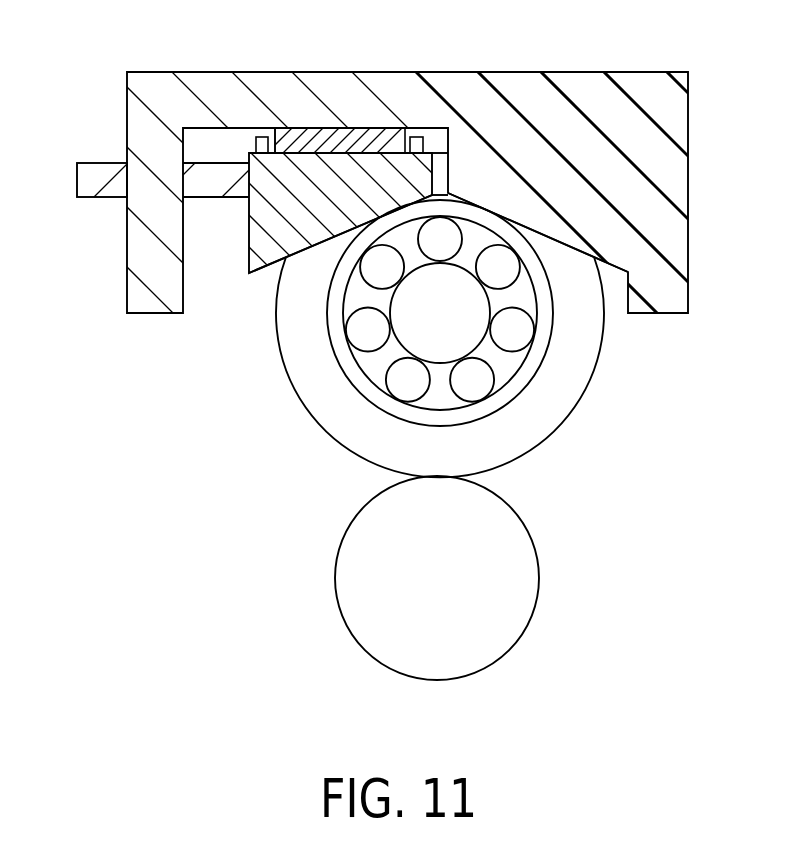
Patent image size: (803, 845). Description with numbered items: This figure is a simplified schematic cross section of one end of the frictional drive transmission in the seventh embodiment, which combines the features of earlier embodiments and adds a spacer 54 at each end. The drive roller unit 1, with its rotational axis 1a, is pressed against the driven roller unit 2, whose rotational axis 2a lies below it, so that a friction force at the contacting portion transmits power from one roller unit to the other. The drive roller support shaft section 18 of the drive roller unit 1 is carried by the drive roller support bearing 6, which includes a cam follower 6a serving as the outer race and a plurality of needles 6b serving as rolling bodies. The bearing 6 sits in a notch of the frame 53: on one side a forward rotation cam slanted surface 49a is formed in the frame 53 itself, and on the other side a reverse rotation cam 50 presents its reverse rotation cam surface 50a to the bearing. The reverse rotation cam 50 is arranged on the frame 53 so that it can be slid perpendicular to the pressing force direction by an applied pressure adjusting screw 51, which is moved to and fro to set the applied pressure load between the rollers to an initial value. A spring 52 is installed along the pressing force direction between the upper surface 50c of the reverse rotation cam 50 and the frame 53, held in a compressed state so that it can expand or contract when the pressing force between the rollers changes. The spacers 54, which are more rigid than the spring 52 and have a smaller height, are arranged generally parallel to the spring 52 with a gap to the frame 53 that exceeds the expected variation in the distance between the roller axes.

The drive roller unit 1 is at (288, 385).
The rotational axis of the drive roller unit 1a is at (438, 314).
The driven roller unit 2 is at (353, 640).
The rotational axis of the driven roller unit 2a is at (437, 577).
The second drive roller support bearing 6 is at (527, 391).
The cam follower 6a is at (372, 407).
The needles 6b is at (488, 381).
The drive roller support shaft section 18 is at (408, 332).
The forward rotation cam slanted surface 49a is at (610, 264).
The reverse rotation cam 50 is at (247, 228).
The reverse rotation cam surface 50a is at (266, 270).
The upper surface of the reverse rotation cam 50c is at (380, 140).
The applied pressure adjusting screw 51 is at (102, 173).
The spring 52 is at (368, 130).
The frame 53 is at (637, 141).
The spacer 54 is at (261, 137).